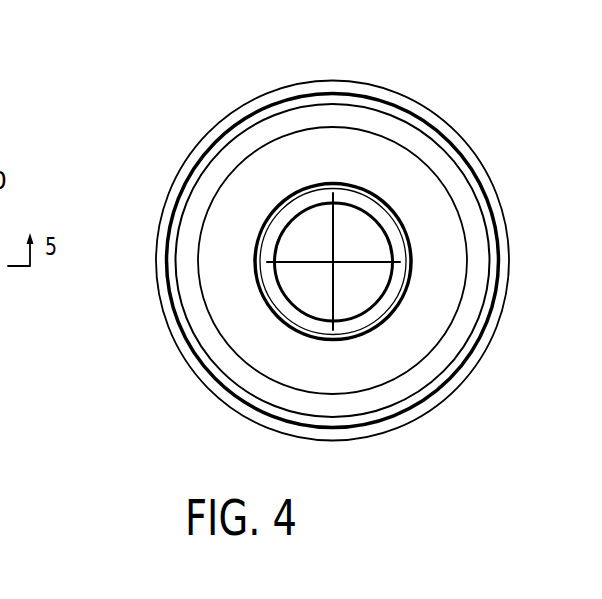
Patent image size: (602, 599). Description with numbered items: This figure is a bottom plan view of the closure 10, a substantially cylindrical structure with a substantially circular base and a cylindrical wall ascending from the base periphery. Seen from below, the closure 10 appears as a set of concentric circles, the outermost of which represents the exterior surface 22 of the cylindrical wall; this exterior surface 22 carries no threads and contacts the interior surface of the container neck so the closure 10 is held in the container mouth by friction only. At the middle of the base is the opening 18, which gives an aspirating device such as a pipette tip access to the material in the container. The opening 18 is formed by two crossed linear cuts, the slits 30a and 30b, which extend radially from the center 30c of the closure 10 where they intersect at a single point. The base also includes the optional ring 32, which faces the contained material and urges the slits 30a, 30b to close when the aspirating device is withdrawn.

The closure 10 is at (458, 71).
The opening 18 is at (313, 297).
The exterior surface 22 is at (168, 193).
The slit 30a is at (336, 233).
The slit 30b is at (378, 256).
The center 30c is at (332, 261).
The ring 32 is at (383, 400).